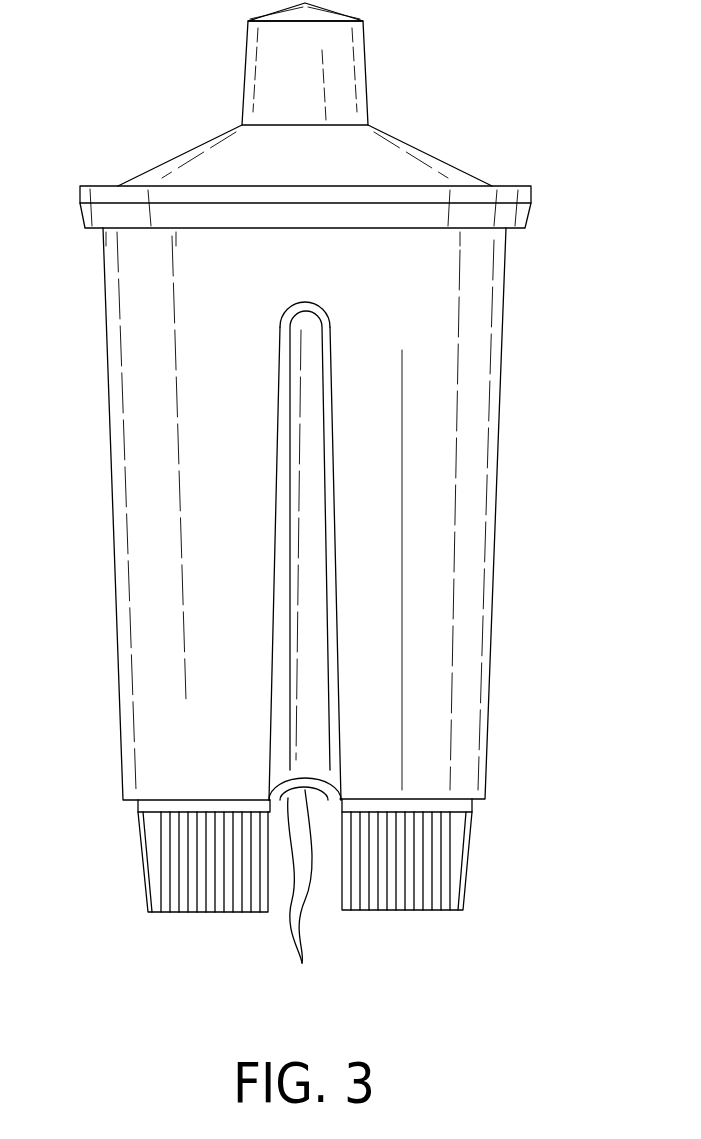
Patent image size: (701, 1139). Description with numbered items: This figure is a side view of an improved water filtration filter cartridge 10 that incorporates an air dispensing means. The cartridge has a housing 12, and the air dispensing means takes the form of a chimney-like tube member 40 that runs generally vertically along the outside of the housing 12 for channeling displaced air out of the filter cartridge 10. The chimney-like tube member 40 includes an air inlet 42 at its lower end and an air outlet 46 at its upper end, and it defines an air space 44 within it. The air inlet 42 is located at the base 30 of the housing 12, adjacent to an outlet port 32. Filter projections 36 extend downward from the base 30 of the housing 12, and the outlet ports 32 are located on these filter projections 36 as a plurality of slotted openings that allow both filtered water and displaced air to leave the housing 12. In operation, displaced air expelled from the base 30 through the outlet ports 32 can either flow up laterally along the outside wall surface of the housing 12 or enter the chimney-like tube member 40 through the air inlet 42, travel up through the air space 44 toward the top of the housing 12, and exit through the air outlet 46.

The filter cartridge 10 is at (515, 140).
The housing 12 is at (430, 502).
The base 30 is at (188, 842).
The outlet port 32 is at (427, 902).
The filter projections 36 is at (469, 850).
The chimney-like tube member 40 is at (312, 388).
The air inlet 42 is at (332, 803).
The air space 44 is at (304, 892).
The air outlet 46 is at (303, 318).